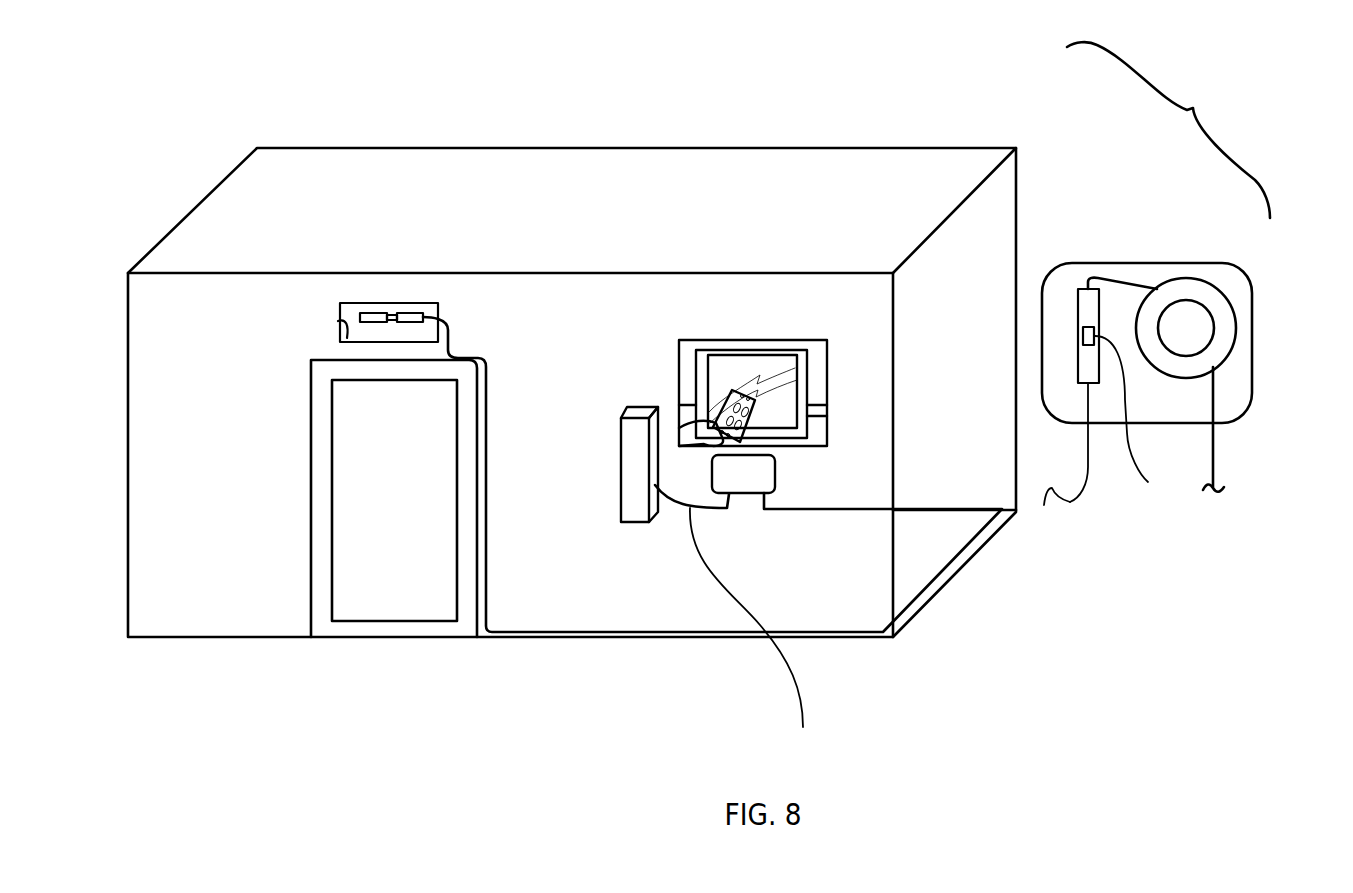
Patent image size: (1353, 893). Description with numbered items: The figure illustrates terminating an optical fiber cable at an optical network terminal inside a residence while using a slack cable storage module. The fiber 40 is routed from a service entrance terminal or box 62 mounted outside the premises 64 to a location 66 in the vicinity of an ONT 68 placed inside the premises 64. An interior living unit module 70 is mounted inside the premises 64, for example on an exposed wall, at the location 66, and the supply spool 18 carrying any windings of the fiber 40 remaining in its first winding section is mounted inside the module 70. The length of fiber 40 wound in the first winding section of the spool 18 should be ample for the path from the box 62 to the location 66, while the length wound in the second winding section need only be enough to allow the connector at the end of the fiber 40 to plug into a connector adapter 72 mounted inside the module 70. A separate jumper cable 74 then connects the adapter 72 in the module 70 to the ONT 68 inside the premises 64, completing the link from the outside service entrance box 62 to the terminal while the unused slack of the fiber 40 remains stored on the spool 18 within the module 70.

The spool 18 is at (1228, 307).
The fiber 40 is at (1157, 288).
The service entrance terminal or box 62 is at (338, 322).
The premises 64 is at (1018, 193).
The location 66 is at (753, 500).
The optical network terminal (ONT) 68 is at (635, 429).
The interior living unit (ILU) module 70 is at (740, 485).
The connector adapter 72 is at (1128, 391).
The jumper cable 74 is at (1070, 502).